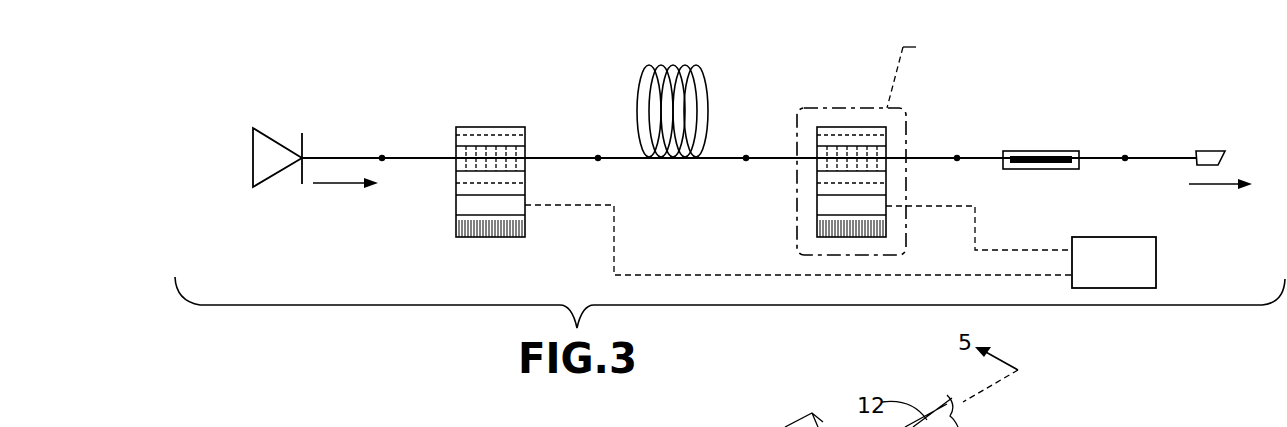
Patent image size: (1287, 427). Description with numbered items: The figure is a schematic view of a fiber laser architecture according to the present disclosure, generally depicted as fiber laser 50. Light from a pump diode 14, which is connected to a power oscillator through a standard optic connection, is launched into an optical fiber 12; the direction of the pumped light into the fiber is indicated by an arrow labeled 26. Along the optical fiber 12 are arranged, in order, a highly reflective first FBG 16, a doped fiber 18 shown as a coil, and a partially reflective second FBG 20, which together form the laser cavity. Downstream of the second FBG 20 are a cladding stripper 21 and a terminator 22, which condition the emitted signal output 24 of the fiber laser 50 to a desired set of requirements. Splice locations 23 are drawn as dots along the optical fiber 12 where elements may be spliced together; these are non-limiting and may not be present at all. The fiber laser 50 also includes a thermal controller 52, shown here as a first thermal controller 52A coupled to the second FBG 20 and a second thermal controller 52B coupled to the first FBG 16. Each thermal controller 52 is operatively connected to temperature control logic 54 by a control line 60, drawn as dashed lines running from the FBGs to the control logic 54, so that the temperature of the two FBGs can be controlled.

The fiber laser 50 is at (316, 78).
The pump diode 14 is at (274, 137).
The optical fiber 12 is at (333, 158).
The splice locations 23 is at (382, 158).
The input light direction 26 is at (335, 185).
The thermal controller 52 is at (686, 146).
The second thermal controller 52B is at (475, 113).
The first thermal controller 52A is at (838, 113).
The first FBG 16 is at (495, 145).
The doped fiber 18 is at (641, 70).
The second FBG 20 is at (857, 145).
The cladding stripper 21 is at (1048, 151).
The terminator 22 is at (1210, 151).
The signal output 24 is at (1213, 186).
The control line 60 is at (668, 275).
The temperature control logic 54 is at (1148, 262).